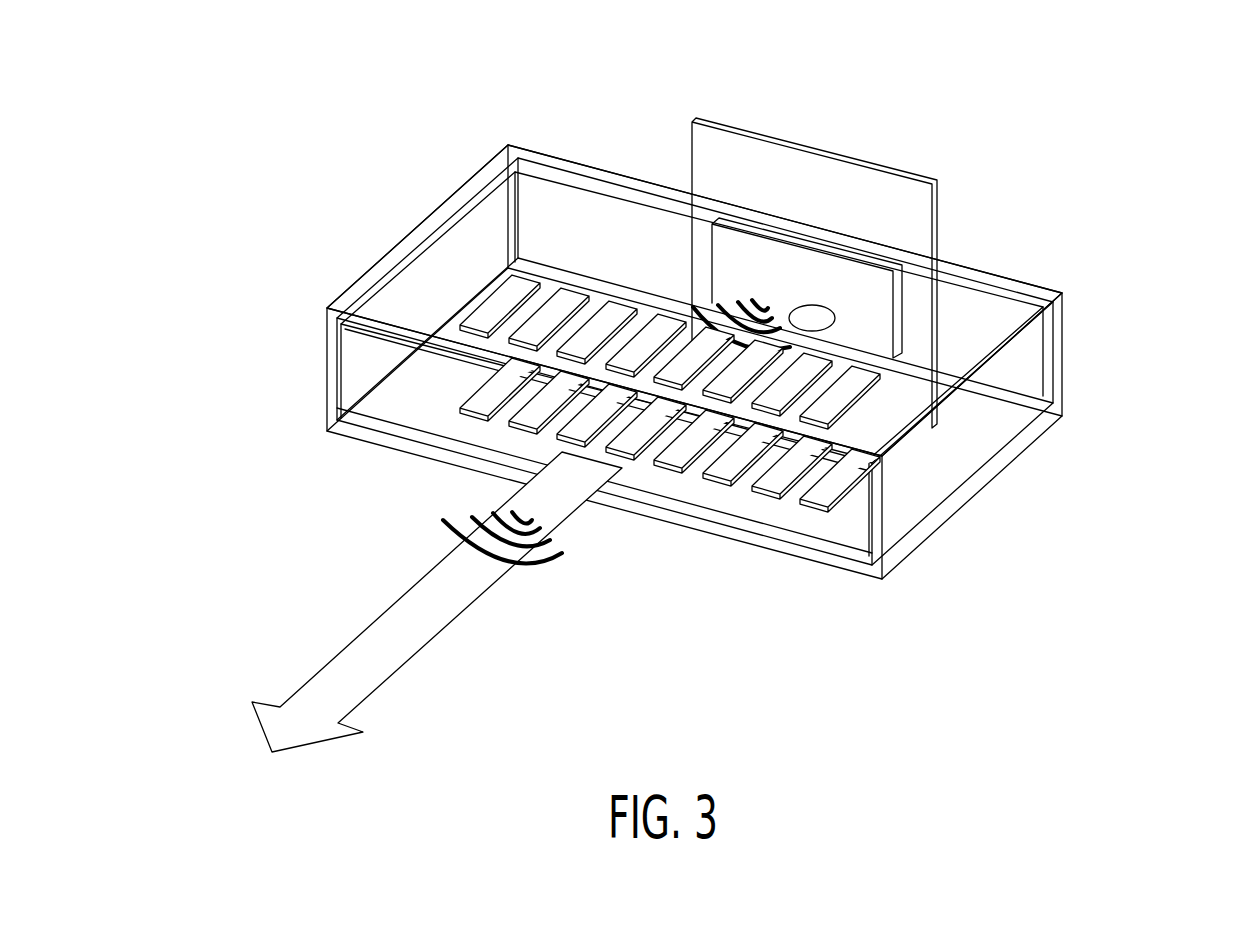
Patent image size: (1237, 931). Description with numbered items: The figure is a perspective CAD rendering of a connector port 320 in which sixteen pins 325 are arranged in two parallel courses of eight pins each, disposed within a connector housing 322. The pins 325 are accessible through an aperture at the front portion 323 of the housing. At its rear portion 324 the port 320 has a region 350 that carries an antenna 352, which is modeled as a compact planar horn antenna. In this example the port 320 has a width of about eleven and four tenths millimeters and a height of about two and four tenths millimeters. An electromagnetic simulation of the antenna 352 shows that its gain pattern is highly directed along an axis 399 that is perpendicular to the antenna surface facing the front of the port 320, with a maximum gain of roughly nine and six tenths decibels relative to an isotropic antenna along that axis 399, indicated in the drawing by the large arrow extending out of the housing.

The port 320 is at (326, 84).
The connector housing 322 is at (1018, 340).
The front portion 323 is at (311, 302).
The rear portion 324 is at (495, 143).
The pins 325 is at (480, 338).
The region 350 is at (837, 205).
The antenna 352 is at (829, 295).
The axis 399 is at (392, 632).